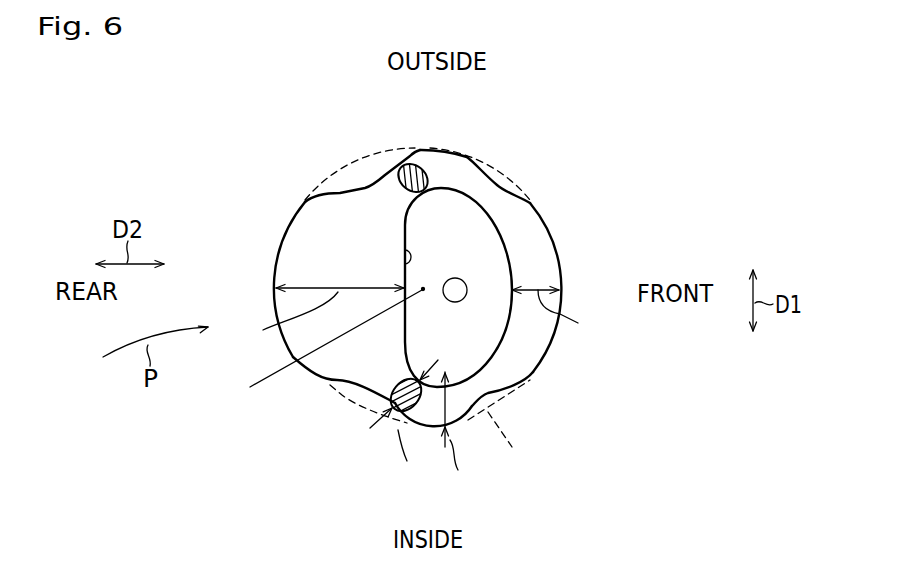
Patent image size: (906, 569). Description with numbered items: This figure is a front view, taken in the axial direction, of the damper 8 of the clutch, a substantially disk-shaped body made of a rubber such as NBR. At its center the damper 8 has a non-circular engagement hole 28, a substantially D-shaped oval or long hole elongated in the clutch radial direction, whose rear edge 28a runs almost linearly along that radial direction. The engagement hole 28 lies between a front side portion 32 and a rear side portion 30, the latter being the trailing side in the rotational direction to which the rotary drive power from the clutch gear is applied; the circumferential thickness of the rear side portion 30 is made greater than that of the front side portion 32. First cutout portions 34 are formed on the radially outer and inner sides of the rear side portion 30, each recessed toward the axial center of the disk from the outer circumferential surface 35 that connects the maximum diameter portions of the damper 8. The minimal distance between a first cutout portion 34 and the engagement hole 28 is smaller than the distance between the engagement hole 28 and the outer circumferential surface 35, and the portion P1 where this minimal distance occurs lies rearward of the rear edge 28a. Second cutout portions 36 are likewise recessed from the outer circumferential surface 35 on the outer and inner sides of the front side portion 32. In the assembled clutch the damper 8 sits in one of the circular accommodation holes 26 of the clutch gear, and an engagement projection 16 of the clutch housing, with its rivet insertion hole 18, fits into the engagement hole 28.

The damper 8 is at (542, 194).
The engagement projections 16 is at (480, 245).
The rivet insertion hole 18 is at (455, 289).
The accommodation holes 26 is at (340, 396).
The engagement hole 28 is at (464, 377).
The rear edge 28a is at (405, 250).
The rear side portion 30 is at (330, 275).
The front side portion 32 is at (538, 290).
The first cutout portions 34 is at (371, 184).
The outer circumferential surface 35 is at (550, 352).
The second cutout portions 36 is at (500, 184).
The portion of the first cutout portion at which the minimal distance is obtained P1 is at (411, 165).